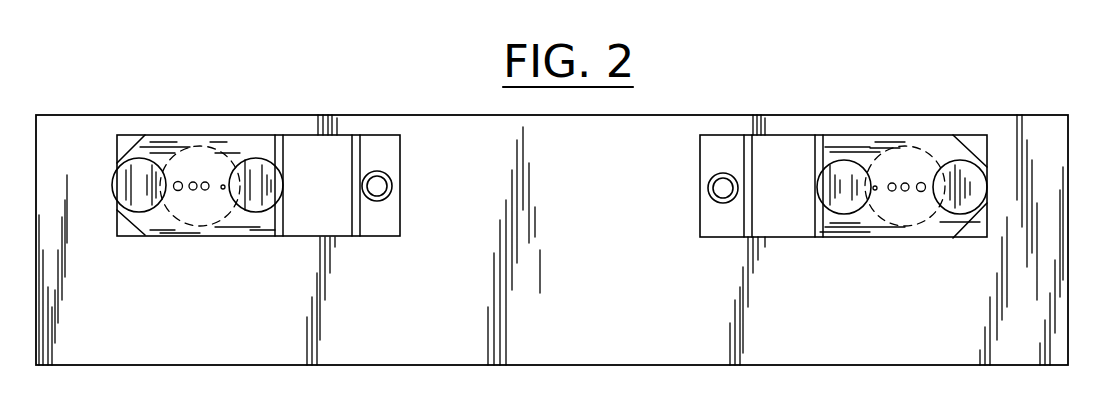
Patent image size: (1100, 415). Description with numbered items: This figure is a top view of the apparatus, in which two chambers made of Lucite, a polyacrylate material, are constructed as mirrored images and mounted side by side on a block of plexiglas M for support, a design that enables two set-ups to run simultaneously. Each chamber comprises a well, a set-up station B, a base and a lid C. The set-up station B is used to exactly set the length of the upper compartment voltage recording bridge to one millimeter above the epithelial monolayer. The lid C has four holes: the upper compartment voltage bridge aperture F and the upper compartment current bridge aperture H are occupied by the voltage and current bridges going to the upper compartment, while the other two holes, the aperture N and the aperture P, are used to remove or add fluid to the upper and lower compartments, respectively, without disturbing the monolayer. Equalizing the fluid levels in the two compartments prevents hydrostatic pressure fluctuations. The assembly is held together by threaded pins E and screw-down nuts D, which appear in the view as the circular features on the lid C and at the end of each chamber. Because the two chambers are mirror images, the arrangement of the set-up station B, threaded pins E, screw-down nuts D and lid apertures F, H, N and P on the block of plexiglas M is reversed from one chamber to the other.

The block of plexiglas M is at (553, 224).
The set-up station B is at (306, 196).
The screw-down nuts D is at (113, 184).
The threaded pins E is at (392, 189).
The lid C is at (151, 211).
The aperture for fluid addition and removal from upper compartment N is at (176, 191).
The upper compartment voltage bridge aperture F is at (193, 191).
The upper compartment current bridge aperture H is at (205, 191).
The aperture for fluid addition to lower compartment P is at (223, 190).